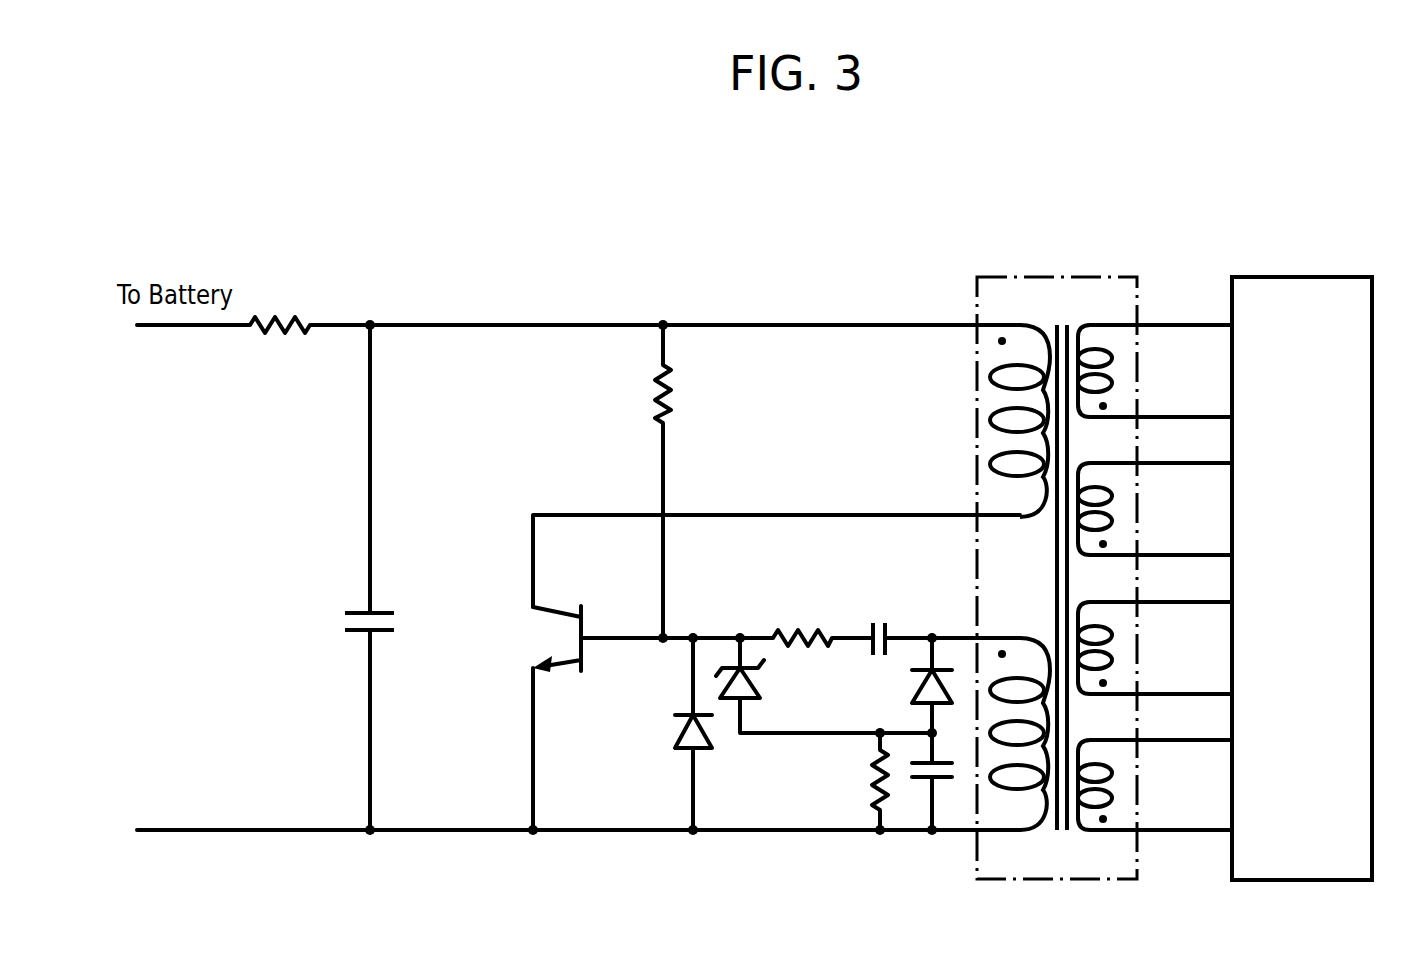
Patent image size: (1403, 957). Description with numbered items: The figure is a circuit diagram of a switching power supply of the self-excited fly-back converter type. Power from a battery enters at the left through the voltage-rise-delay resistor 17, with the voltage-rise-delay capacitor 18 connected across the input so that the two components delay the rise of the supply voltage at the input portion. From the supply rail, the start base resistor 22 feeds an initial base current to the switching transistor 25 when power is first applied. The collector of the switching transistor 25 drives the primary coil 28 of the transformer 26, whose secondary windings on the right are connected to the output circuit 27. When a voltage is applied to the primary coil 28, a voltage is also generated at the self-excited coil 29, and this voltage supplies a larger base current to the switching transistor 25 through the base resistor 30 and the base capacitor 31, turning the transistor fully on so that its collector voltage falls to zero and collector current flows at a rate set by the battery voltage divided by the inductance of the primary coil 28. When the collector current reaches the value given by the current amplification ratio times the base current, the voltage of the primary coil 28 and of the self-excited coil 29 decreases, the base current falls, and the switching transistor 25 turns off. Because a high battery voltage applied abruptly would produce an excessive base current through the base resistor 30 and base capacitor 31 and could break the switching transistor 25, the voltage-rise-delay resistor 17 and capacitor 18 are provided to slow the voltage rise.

The voltage-rise-delay resistor 17 is at (283, 302).
The voltage-rise-delay capacitor 18 is at (340, 600).
The start base resistor 22 is at (637, 398).
The switching transistor 25 is at (525, 625).
The transformer 26 is at (1048, 277).
The output circuit 27 is at (1280, 275).
The primary coil 28 is at (990, 363).
The self-excited coil 29 is at (998, 802).
The base resistor 30 is at (790, 618).
The base capacitor 31 is at (880, 612).